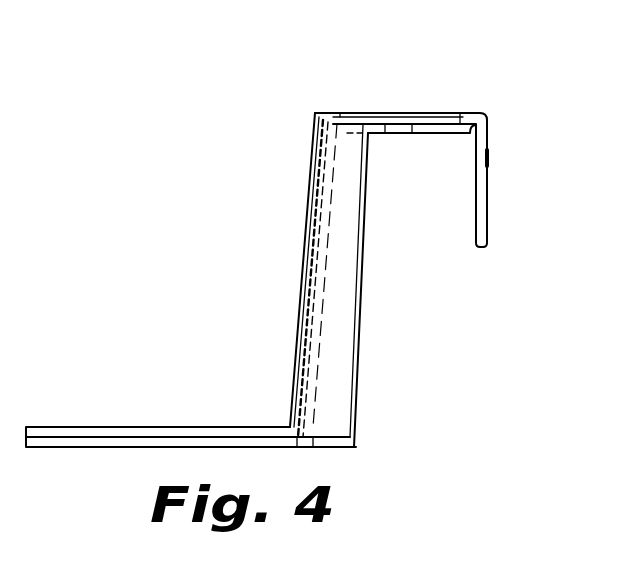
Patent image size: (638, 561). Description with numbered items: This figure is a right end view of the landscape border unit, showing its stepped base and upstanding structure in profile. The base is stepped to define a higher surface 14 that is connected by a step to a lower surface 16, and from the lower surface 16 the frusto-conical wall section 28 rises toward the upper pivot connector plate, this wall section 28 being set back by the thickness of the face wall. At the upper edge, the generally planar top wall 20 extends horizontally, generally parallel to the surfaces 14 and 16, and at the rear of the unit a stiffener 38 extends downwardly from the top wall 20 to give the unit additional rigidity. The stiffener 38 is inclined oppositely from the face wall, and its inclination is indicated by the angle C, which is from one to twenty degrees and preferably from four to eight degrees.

The higher surface 14 is at (97, 427).
The lower surface 16 is at (150, 436).
The top wall 20 is at (430, 113).
The frusto-conical wall section 28 is at (342, 328).
The stiffener 38 is at (476, 225).
The angle C is at (520, 172).